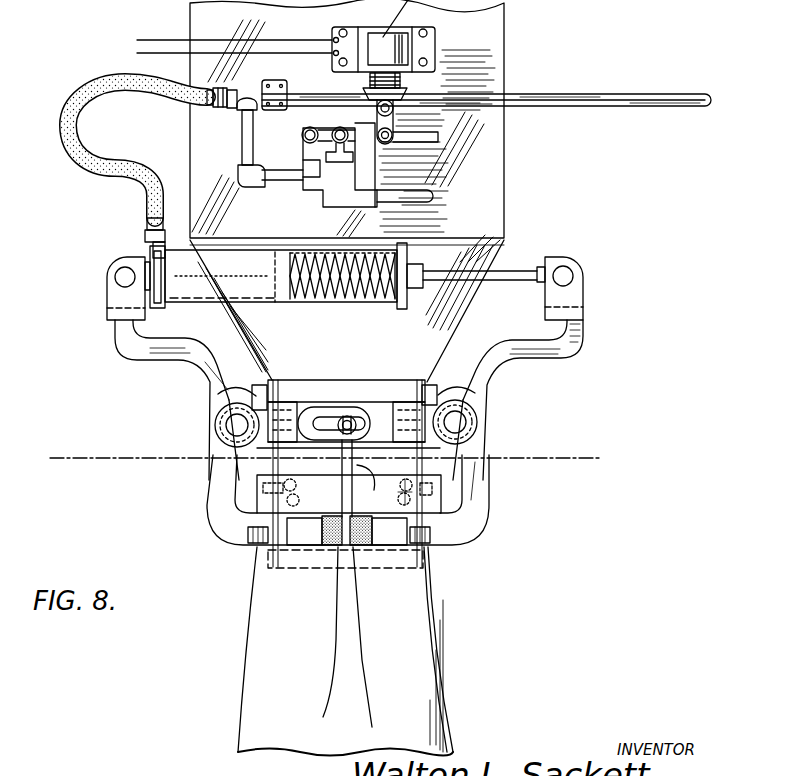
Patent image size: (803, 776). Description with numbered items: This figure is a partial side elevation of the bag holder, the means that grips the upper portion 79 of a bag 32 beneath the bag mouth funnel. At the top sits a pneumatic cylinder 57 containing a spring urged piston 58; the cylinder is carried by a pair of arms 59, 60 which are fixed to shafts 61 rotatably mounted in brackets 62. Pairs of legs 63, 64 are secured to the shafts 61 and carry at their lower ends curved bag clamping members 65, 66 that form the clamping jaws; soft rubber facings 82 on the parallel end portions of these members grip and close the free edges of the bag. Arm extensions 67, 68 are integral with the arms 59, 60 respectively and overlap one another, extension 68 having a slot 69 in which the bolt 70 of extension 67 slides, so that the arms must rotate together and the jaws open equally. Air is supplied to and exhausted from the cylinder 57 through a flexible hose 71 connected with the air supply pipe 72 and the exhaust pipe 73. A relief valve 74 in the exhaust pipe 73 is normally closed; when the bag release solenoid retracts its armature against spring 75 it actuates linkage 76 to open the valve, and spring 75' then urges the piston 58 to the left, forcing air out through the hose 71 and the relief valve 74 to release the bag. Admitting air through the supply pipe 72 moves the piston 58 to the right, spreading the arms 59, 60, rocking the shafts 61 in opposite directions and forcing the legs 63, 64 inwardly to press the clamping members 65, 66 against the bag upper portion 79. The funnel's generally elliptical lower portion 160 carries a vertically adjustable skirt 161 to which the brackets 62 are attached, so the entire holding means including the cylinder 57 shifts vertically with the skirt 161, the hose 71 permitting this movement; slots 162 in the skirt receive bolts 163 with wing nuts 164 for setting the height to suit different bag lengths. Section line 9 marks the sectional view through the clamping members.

The section line 9 is at (123, 452).
The bag 32 is at (448, 630).
The pneumatic cylinder 57 is at (248, 250).
The spring urged piston 58 is at (291, 274).
The arm 59 is at (213, 393).
The arm 60 is at (492, 384).
The shaft 61 is at (232, 426).
The bracket 62 is at (258, 397).
The leg 63 is at (213, 503).
The leg 64 is at (480, 502).
The curved bag clamping member 65 is at (307, 525).
The curved bag clamping member 66 is at (402, 527).
The arm extension 67 is at (292, 417).
The arm extension 68 is at (370, 417).
The slot 69 is at (327, 422).
The bolt 70 is at (343, 436).
The flexible hose 71 is at (90, 73).
The air supply pipe 72 is at (588, 94).
The exhaust pipe 73 is at (277, 170).
The relief valve 74 is at (345, 181).
The spring 75 is at (344, 73).
The spring 75' is at (342, 298).
The linkage 76 is at (377, 118).
The upper portion of the bag 79 is at (441, 478).
The soft rubber facing 82 is at (338, 522).
The lower portion of the funnel 160 is at (357, 380).
The skirt 161 is at (446, 395).
The slot 162 is at (387, 494).
The bolt 163 is at (300, 500).
The wing nut 164 is at (297, 484).